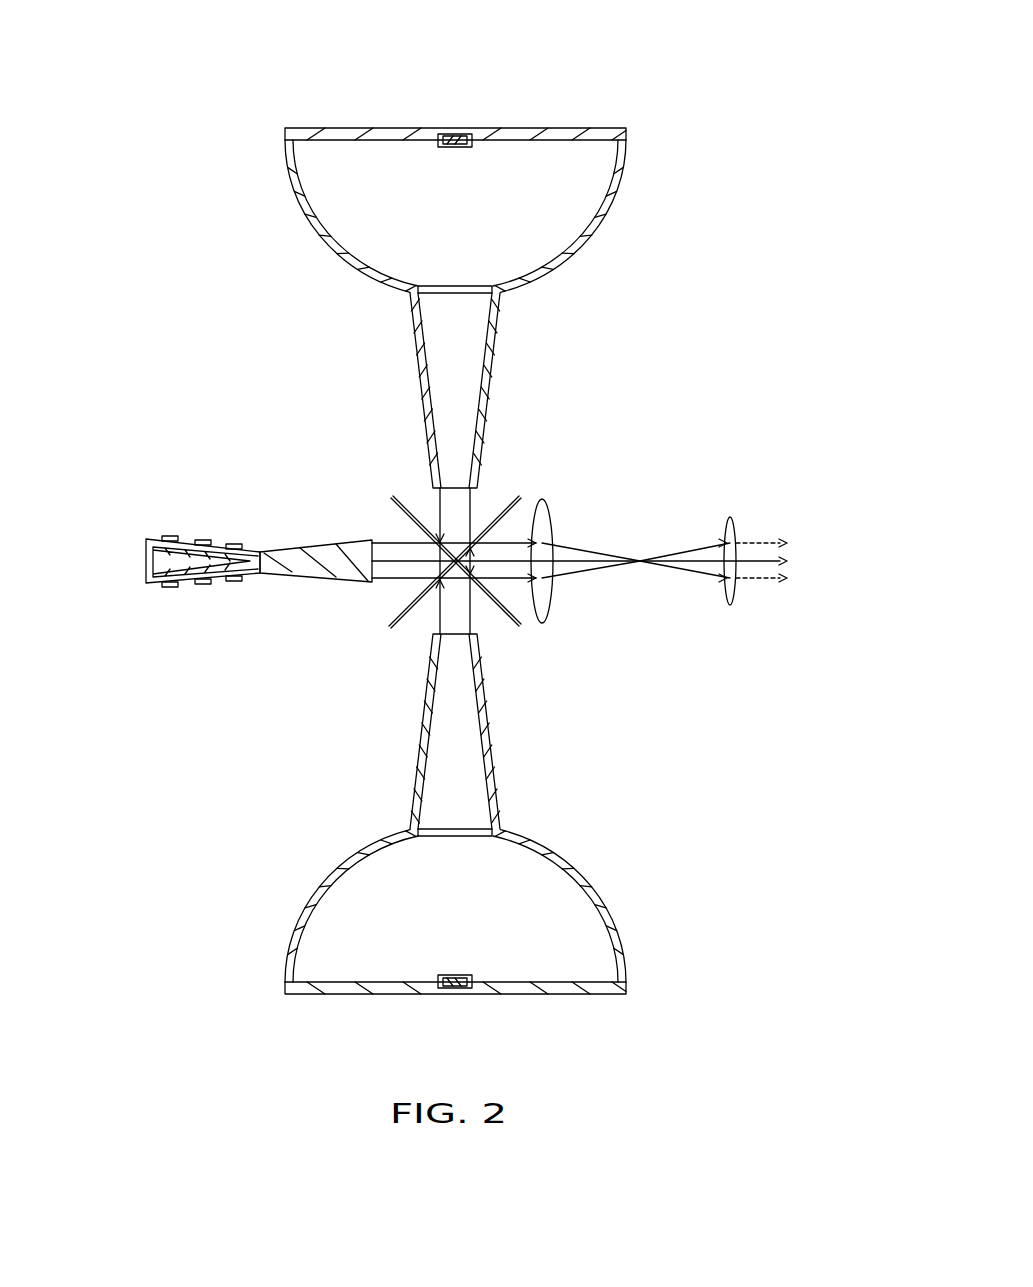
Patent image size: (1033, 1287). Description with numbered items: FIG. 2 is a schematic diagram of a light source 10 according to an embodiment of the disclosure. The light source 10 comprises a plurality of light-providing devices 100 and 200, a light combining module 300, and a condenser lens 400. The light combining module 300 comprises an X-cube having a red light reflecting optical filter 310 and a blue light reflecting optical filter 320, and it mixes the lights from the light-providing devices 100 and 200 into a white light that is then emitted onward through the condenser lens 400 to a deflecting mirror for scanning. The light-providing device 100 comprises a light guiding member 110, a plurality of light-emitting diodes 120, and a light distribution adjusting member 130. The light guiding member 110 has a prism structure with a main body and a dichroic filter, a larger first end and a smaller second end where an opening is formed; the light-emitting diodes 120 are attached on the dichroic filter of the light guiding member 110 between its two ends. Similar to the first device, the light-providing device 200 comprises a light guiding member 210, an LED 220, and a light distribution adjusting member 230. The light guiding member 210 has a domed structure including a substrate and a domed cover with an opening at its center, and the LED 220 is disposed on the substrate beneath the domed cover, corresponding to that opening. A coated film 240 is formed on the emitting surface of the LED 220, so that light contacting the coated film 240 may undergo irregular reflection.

The light source 10 is at (118, 62).
The light-providing device 100 is at (130, 524).
The light guiding member 110 is at (147, 563).
The light-emitting diodes 120 is at (200, 539).
The light distribution adjusting member 130 is at (290, 556).
The light-providing device 200 is at (293, 113).
The light guiding member 210 is at (548, 203).
The LED 220 is at (455, 133).
The light distribution adjusting member 230 is at (487, 397).
The coated film 240 is at (456, 142).
The light combining module 300 is at (518, 497).
The red light reflecting optical filter 310 is at (392, 497).
The blue light reflecting optical filter 320 is at (390, 626).
The condenser lens 400 is at (732, 627).